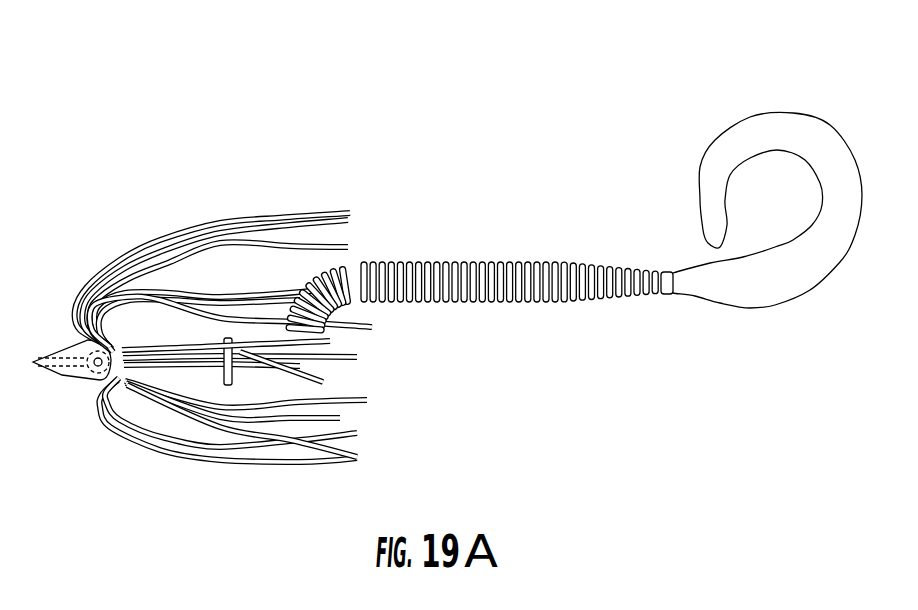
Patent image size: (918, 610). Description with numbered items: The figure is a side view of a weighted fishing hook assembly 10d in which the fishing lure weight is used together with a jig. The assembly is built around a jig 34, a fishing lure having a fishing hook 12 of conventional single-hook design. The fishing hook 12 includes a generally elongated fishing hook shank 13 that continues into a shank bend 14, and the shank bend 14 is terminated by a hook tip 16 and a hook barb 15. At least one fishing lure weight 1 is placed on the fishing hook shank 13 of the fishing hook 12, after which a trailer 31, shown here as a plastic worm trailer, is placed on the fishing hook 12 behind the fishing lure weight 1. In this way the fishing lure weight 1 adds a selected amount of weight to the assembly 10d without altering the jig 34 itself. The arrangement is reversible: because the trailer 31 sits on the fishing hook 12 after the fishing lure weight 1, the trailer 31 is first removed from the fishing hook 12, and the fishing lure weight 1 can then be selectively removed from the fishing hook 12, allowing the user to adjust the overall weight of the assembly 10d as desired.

The fishing lure 10d is at (251, 74).
The fishing lure weight 1 is at (203, 376).
The fishing hook 12 is at (336, 343).
The fishing hook shank 13 is at (298, 372).
The shank bend 14 is at (308, 258).
The hook barb 15 is at (289, 270).
The hook tip 16 is at (228, 240).
The trailer 31 is at (585, 260).
The jig 34 is at (77, 383).